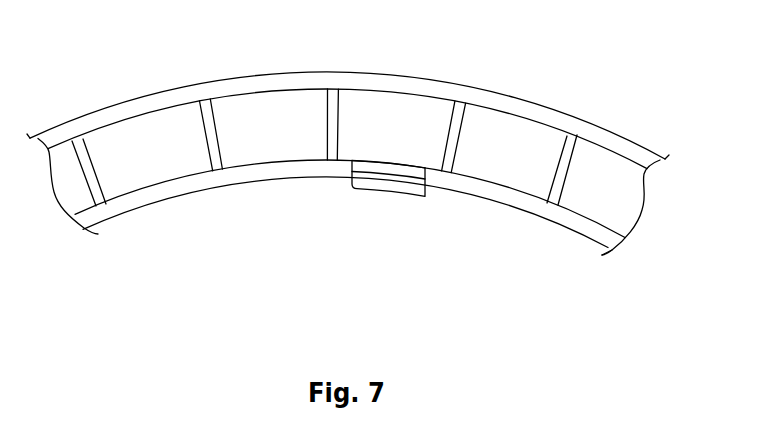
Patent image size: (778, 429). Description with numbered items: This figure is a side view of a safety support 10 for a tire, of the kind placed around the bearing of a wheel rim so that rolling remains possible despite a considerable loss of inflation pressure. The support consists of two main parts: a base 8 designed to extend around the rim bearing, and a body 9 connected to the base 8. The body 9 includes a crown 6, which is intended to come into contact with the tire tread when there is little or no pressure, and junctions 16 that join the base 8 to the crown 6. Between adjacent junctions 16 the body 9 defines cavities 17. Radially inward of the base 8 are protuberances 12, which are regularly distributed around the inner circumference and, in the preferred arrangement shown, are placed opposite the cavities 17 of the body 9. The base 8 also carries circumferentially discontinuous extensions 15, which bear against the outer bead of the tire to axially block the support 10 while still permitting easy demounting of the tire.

The support 10 is at (378, 143).
The crown 6 is at (362, 85).
The base 8 is at (487, 193).
The body 9 is at (634, 200).
The protuberances 12 is at (377, 184).
The extensions 15 is at (363, 167).
The junctions 16 is at (453, 132).
The cavities 17 is at (513, 138).